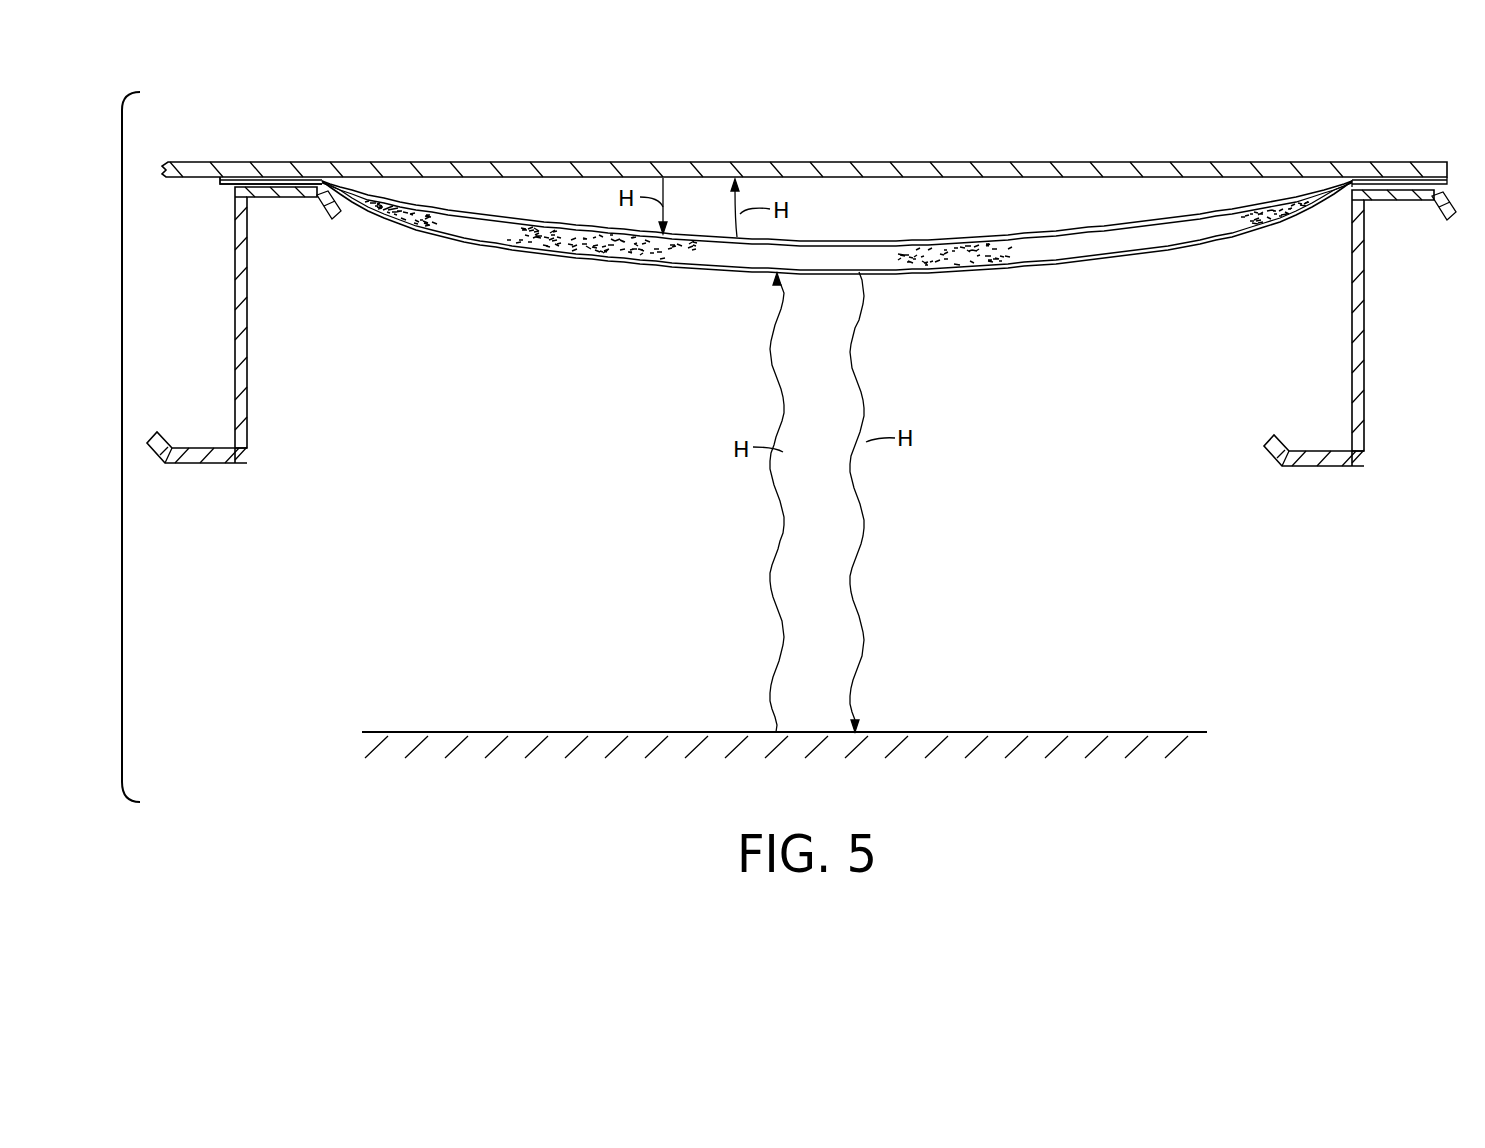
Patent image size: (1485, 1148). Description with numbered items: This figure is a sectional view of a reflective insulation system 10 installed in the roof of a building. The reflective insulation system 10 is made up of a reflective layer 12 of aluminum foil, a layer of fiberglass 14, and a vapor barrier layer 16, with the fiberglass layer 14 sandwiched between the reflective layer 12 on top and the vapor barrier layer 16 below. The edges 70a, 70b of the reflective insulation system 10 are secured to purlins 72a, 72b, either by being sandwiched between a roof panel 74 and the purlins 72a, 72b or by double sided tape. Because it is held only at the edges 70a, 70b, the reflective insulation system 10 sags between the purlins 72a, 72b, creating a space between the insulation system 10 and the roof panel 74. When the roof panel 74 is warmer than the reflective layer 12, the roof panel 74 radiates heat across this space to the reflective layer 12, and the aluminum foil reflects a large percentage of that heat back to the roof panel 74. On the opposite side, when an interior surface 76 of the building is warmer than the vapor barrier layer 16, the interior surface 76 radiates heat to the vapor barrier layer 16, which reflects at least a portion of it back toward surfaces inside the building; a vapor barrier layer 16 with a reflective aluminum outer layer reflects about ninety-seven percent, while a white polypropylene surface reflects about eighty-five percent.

The reflective insulation system 10 is at (904, 208).
The reflective layer 12 is at (487, 214).
The layer of fiberglass 14 is at (583, 236).
The vapor barrier layer 16 is at (462, 240).
The edge 70a is at (268, 178).
The edge 70b is at (1387, 181).
The purlin 72a is at (245, 345).
The purlin 72b is at (1358, 350).
The roof panel 74 is at (808, 170).
The interior surface 76 is at (676, 731).